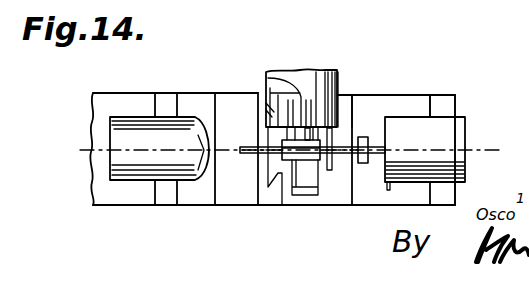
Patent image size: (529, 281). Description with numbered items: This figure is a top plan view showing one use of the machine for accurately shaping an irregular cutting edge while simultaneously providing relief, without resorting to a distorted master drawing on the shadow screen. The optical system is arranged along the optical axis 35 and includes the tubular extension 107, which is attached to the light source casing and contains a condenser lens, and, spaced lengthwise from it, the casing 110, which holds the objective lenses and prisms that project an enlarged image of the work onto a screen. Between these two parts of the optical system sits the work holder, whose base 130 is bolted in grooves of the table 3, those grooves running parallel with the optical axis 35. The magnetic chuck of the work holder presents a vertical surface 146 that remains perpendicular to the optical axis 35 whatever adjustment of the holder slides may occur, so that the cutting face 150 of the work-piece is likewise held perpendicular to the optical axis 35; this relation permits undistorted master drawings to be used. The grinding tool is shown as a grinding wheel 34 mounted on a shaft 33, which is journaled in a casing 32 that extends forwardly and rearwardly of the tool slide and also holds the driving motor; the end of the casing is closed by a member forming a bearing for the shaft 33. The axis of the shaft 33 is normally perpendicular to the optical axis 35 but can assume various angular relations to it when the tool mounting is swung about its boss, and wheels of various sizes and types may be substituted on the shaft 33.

The table 3 is at (442, 99).
The casing 32 is at (338, 73).
The shaft 33 is at (300, 96).
The grinding wheel 34 is at (247, 139).
The optical axis 35 is at (400, 152).
The tubular extension 107 is at (150, 86).
The casing 110 is at (450, 135).
The base 130 is at (348, 110).
The vertical surface 146 is at (310, 186).
The cutting face 150 is at (340, 168).